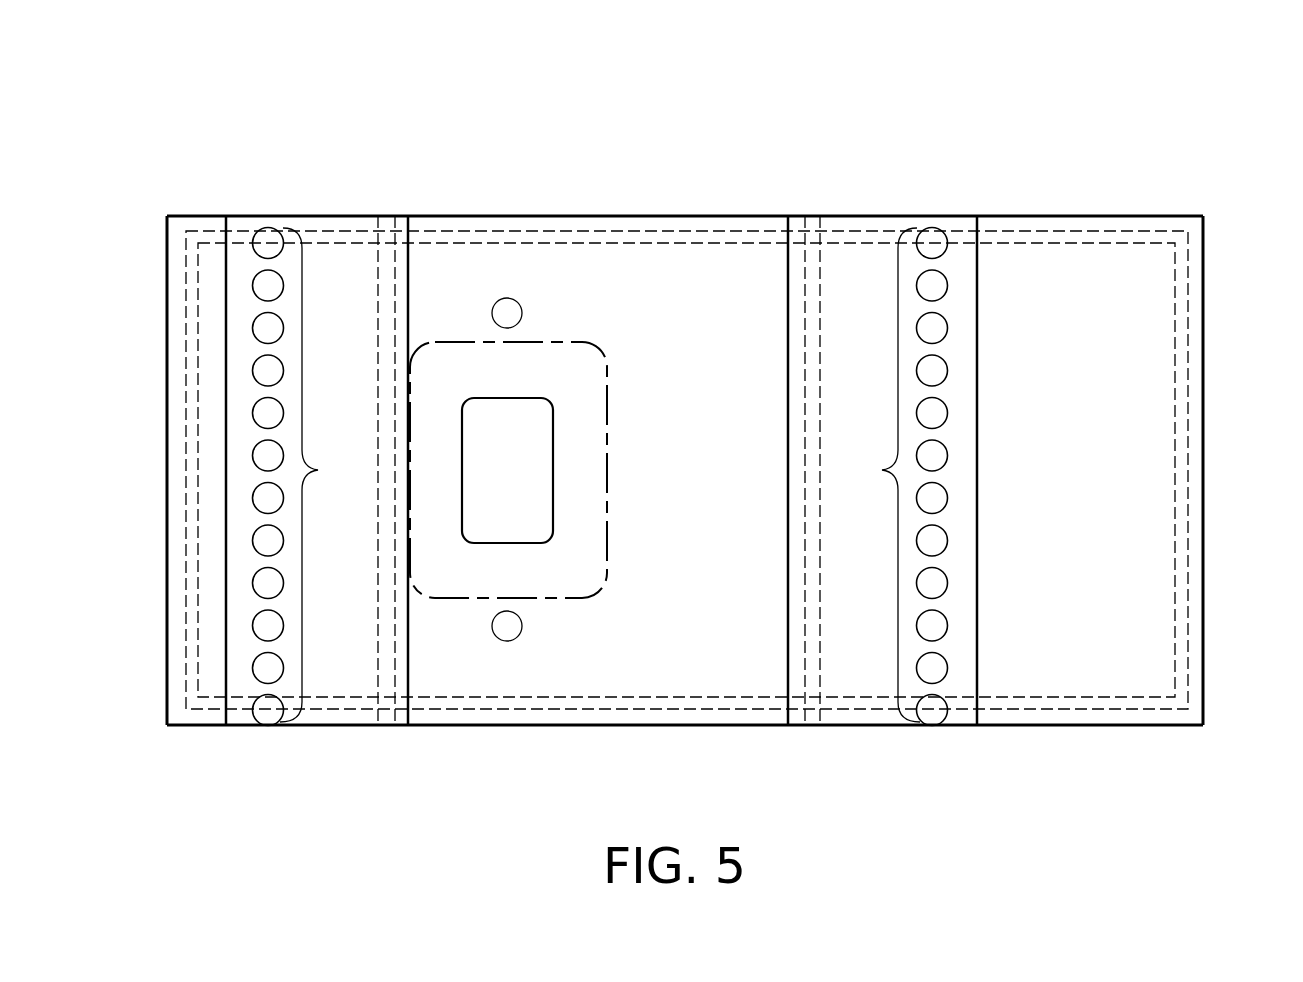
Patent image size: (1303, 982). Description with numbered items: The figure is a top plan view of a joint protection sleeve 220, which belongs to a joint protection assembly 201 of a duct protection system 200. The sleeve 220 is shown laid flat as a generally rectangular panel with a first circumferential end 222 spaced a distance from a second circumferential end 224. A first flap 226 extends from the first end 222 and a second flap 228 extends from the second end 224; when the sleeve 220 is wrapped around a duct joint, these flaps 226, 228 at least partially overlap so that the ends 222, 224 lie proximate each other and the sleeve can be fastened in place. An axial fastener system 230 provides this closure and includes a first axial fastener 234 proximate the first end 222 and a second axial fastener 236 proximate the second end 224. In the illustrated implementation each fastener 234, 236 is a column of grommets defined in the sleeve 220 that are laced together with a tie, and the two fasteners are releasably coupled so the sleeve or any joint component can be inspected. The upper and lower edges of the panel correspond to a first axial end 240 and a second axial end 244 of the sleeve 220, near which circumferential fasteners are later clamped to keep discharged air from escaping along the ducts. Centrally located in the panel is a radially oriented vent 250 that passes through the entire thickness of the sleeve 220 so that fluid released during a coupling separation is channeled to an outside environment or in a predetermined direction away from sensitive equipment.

The duct protection system 200 is at (296, 143).
The joint protection assembly 201 is at (423, 183).
The joint protection sleeve 220 is at (1139, 197).
The first circumferential end 222 is at (225, 535).
The second circumferential end 224 is at (977, 525).
The first flap 226 is at (215, 406).
The second flap 228 is at (1138, 390).
The axial fastener system 230 is at (255, 327).
The first axial fastener 234 is at (327, 475).
The second axial fastener 236 is at (875, 475).
The first axial end 240 is at (489, 725).
The second axial end 244 is at (590, 215).
The radially-oriented vent 250 is at (482, 397).